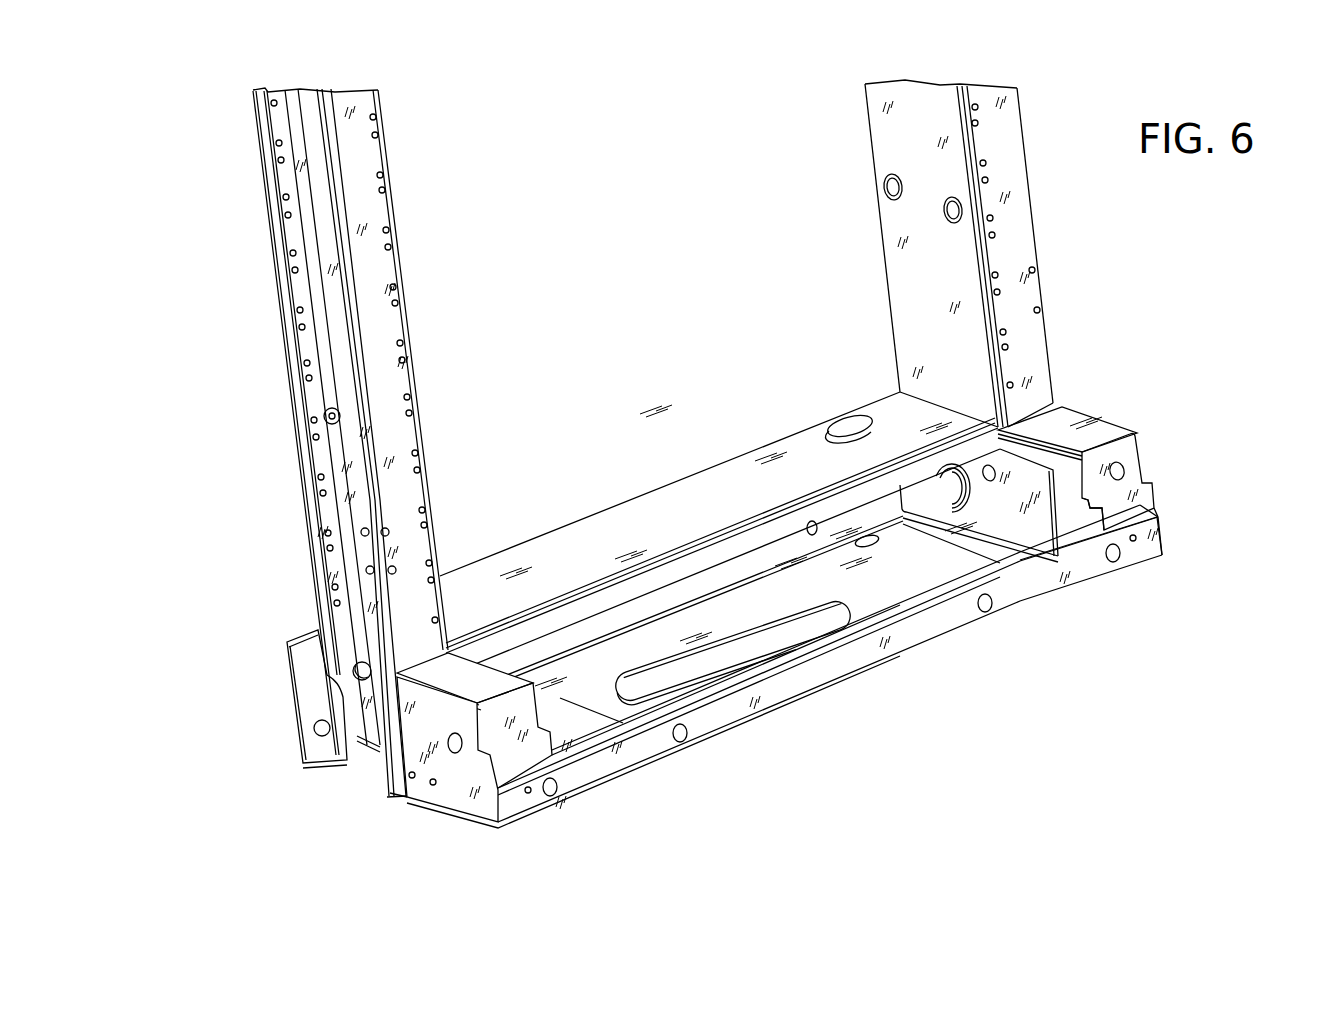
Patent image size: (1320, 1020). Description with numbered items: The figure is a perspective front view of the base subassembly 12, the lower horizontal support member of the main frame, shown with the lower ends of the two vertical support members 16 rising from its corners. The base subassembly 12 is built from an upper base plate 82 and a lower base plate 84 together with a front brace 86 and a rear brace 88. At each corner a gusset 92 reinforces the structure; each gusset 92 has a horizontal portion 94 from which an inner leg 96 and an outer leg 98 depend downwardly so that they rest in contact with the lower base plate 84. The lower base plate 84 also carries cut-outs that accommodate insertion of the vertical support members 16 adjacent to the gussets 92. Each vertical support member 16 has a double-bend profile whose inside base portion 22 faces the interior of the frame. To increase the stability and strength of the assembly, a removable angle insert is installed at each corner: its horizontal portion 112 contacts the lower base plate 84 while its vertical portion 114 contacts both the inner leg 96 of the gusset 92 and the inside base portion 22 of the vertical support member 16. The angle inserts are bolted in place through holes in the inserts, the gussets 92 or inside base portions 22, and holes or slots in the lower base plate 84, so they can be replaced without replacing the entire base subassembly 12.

The base subassembly 12 is at (1097, 245).
The vertical support member 16 is at (388, 167).
The inside base portion 22 is at (917, 283).
The upper base plate 82 is at (762, 496).
The lower base plate 84 is at (617, 653).
The front brace 86 is at (857, 657).
The rear brace 88 is at (293, 684).
The gusset 92 is at (450, 784).
The horizontal portion 94 is at (1060, 425).
The inner leg 96 is at (1078, 512).
The outer leg 98 is at (1160, 494).
The horizontal portion 112 is at (903, 568).
The vertical portion 114 is at (1013, 520).